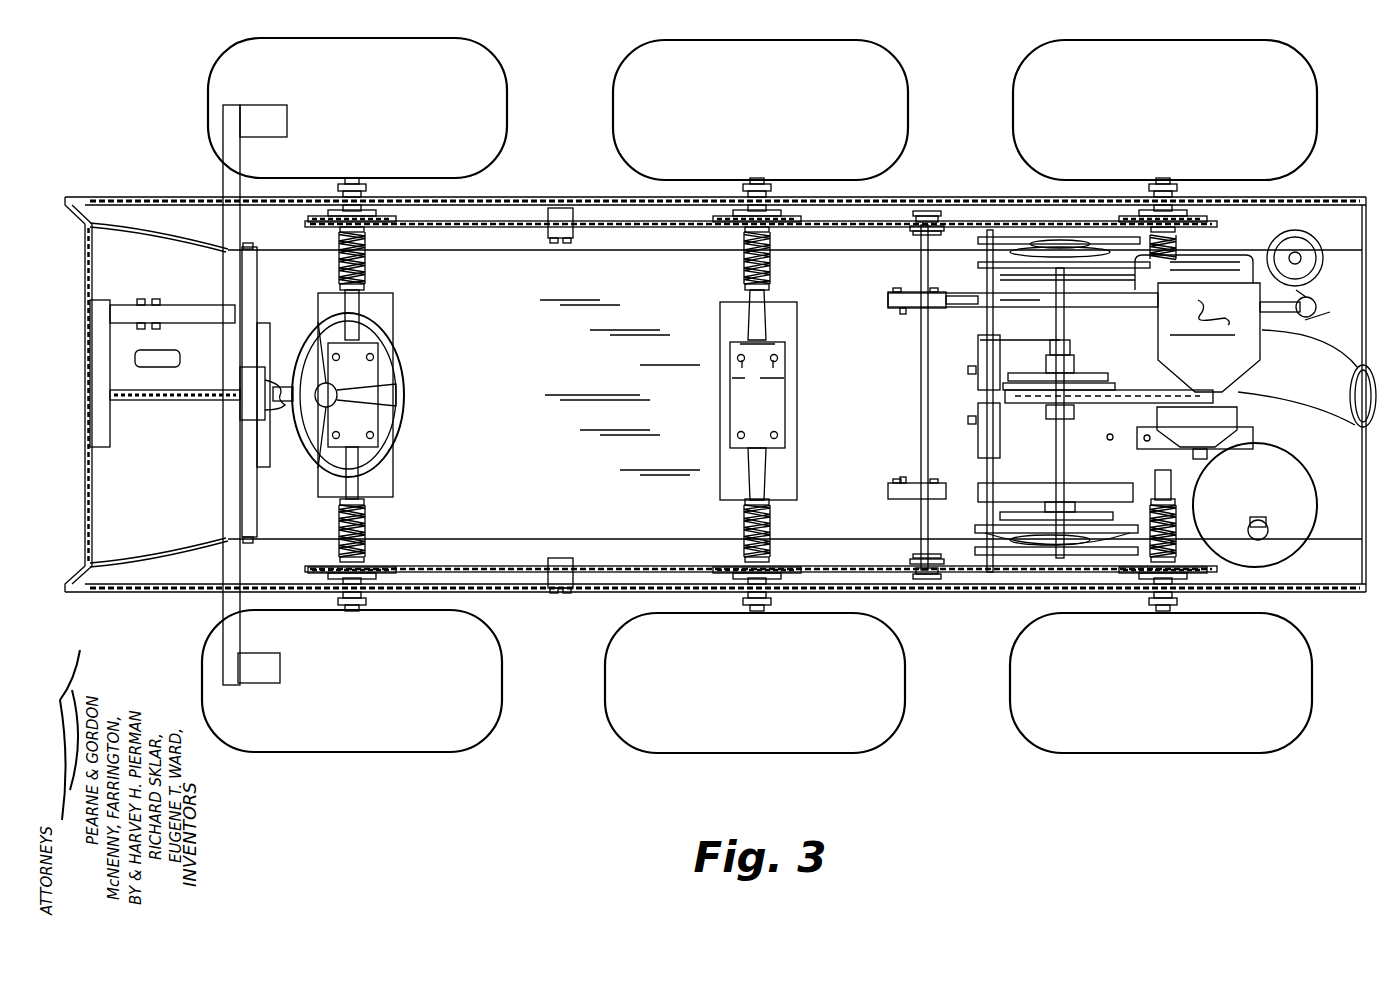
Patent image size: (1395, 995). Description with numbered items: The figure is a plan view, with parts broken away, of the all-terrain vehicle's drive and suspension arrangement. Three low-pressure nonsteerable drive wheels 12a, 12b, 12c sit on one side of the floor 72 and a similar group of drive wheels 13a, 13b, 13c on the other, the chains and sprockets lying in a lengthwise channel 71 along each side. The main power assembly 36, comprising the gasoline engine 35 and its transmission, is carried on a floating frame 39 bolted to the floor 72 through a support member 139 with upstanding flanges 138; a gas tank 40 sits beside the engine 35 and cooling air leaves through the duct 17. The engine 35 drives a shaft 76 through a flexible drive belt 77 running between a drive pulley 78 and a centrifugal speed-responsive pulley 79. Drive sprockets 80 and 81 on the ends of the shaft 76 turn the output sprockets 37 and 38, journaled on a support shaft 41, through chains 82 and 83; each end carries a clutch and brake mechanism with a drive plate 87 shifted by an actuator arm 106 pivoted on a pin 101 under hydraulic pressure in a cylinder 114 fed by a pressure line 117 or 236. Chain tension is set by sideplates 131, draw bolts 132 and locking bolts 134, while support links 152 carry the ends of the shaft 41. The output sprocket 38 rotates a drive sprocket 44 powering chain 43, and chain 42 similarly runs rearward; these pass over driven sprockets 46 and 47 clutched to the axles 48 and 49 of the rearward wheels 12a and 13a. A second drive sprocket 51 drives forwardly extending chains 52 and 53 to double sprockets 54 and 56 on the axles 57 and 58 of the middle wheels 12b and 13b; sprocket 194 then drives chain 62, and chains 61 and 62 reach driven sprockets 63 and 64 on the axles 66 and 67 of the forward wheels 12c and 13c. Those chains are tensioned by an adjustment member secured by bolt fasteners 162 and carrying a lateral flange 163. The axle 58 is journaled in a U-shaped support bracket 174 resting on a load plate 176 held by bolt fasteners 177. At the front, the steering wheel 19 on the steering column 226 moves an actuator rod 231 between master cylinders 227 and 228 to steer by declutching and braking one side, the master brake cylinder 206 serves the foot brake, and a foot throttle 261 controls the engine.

The rearward drive wheel 12a is at (1013, 100).
The middle drive wheel 12b is at (613, 120).
The forward drive wheel 12c is at (208, 108).
The rearward drive wheel 13a is at (1143, 753).
The middle drive wheel 13b is at (722, 753).
The forward drive wheel 13c is at (452, 752).
The duct 17 is at (1322, 366).
The steering wheel 19 is at (400, 375).
The gasoline engine 35 is at (1240, 258).
The main power assembly 36 is at (1316, 307).
The output sprocket 37 is at (910, 293).
The output sprocket 38 is at (905, 500).
The floating frame 39 is at (975, 300).
The gas tank 40 is at (1318, 470).
The support shaft 41 is at (918, 384).
The rearwardly extending chain 42 is at (985, 221).
The rearwardly extending chain 43 is at (1072, 572).
The drive sprocket 44 is at (930, 582).
The driven sprocket 46 is at (1180, 240).
The driven sprocket 47 is at (1205, 572).
The axle 48 is at (1175, 182).
The axle 49 is at (1175, 480).
The second drive sprocket 51 is at (912, 562).
The intermediate forwardly extending chain 52 is at (835, 228).
The intermediate forwardly extending chain 53 is at (835, 570).
The double sprocket 54 is at (740, 232).
The double sprocket 56 is at (780, 557).
The axle 57 is at (745, 298).
The axle 58 is at (746, 482).
The drive chain 61 is at (523, 230).
The drive chain 62 is at (510, 572).
The driven sprocket 63 is at (396, 222).
The driven sprocket 64 is at (390, 568).
The axle 66 is at (366, 290).
The axle 67 is at (342, 505).
The lengthwise channel 71 is at (615, 240).
The floor 72 is at (715, 394).
The shaft 76 is at (1055, 445).
The flexible drive belt 77 is at (1150, 400).
The drive pulley 78 is at (1040, 405).
The speed responsive drive pulley 79 is at (1232, 400).
The drive sprocket 80 is at (1070, 248).
The drive sprocket 81 is at (1048, 548).
The chain 82 is at (985, 270).
The chain 83 is at (1000, 548).
The drive plate 87 is at (1015, 514).
The pin 101 is at (1128, 520).
The actuator arm 106 is at (1010, 555).
The cylinder 114 is at (978, 440).
The pressure line 117 is at (968, 420).
The sideplates 131 is at (908, 314).
The draw bolts 132 is at (888, 300).
The bolts 134 is at (895, 310).
The upstanding flanges 138 is at (1200, 460).
The support member 139 is at (1112, 430).
The support link 152 is at (923, 210).
The bolt fasteners 162 is at (565, 208).
The lateral flange 163 is at (578, 222).
The U-shaped support bracket 174 is at (378, 418).
The load plate 176 is at (393, 478).
The bolt fasteners 177 is at (374, 357).
The sprocket 194 is at (715, 575).
The master brake cylinder 206 is at (186, 305).
The steering column 226 is at (172, 400).
The master cylinder 227 is at (258, 500).
The master cylinder 228 is at (257, 285).
The actuator rod 231 is at (242, 438).
The pressure line 236 is at (970, 366).
The foot throttle 261 is at (160, 352).